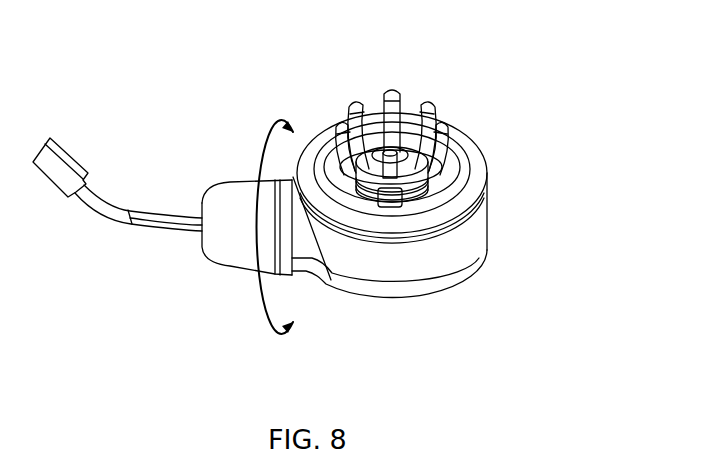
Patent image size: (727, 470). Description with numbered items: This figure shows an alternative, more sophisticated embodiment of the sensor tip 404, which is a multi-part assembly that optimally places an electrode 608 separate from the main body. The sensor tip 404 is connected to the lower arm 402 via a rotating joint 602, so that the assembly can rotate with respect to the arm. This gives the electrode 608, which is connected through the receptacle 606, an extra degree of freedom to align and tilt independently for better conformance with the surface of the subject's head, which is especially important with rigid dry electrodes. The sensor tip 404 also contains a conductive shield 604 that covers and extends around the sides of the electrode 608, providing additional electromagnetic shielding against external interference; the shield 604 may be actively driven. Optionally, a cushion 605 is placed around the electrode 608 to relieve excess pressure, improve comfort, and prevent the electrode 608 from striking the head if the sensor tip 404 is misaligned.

The lower arm 402 is at (71, 153).
The sensor tip 404 is at (477, 298).
The rotating joint 602 is at (289, 277).
The conductive shield 604 is at (489, 208).
The cushion 605 is at (484, 168).
The receptacle 606 is at (424, 168).
The electrode 608 is at (393, 93).